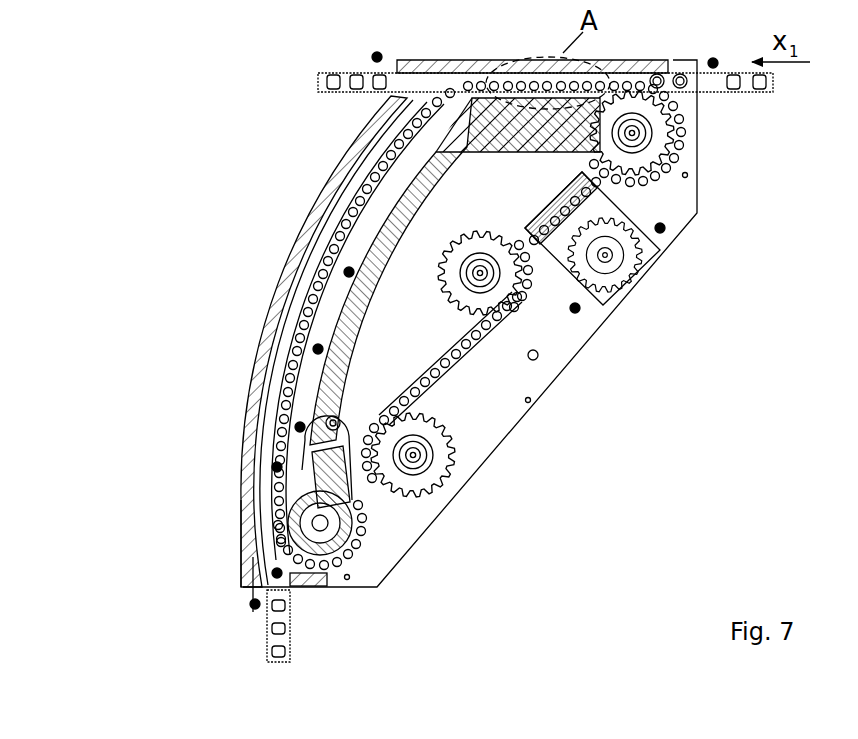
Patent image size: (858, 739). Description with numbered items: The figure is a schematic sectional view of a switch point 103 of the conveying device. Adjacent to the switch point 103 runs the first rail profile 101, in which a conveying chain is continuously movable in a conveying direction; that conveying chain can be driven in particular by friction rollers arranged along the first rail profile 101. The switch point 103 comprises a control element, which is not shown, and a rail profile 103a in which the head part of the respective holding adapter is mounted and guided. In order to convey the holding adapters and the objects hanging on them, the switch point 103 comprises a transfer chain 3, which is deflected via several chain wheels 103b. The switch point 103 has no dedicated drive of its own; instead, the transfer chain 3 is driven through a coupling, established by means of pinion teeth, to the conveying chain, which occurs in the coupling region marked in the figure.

The transfer chain 3 is at (643, 177).
The first rail profile 101 is at (724, 96).
The switch point 103 is at (215, 197).
The rail profile 103a is at (265, 628).
The chain wheels 103b is at (657, 143).